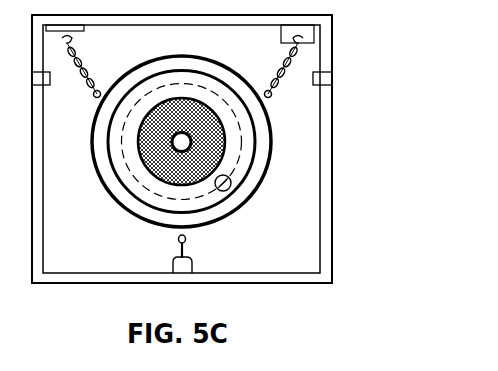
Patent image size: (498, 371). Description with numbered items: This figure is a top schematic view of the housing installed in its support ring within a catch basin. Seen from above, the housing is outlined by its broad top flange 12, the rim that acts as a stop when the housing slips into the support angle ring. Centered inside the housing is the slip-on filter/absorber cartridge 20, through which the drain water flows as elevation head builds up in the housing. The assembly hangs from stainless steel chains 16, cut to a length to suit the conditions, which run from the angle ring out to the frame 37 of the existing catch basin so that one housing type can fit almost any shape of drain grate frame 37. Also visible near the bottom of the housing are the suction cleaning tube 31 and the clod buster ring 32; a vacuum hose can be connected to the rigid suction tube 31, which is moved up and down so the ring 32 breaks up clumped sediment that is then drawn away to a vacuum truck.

The top flange of housing 12 is at (273, 155).
The stainless steel chains 16 is at (288, 68).
The filter/absorber cartridge 20 is at (225, 132).
The suction cleaning tube 31 is at (231, 186).
The clod buster ring 32 is at (186, 199).
The catch basin frame 37 is at (334, 258).